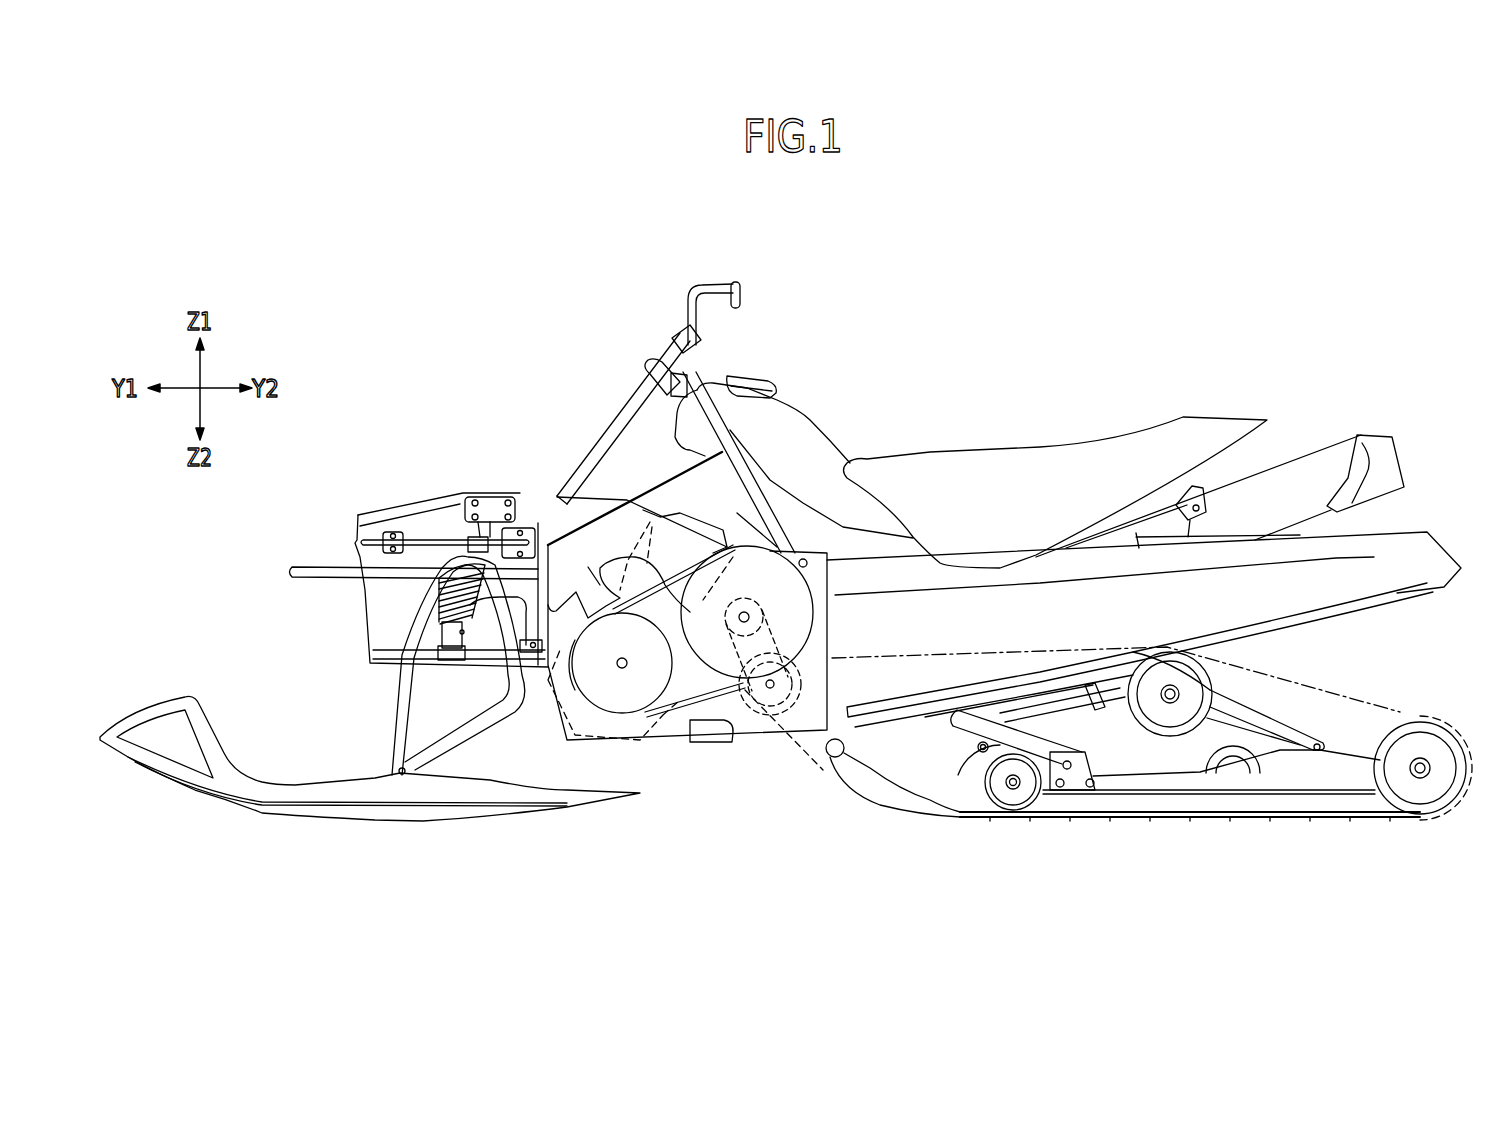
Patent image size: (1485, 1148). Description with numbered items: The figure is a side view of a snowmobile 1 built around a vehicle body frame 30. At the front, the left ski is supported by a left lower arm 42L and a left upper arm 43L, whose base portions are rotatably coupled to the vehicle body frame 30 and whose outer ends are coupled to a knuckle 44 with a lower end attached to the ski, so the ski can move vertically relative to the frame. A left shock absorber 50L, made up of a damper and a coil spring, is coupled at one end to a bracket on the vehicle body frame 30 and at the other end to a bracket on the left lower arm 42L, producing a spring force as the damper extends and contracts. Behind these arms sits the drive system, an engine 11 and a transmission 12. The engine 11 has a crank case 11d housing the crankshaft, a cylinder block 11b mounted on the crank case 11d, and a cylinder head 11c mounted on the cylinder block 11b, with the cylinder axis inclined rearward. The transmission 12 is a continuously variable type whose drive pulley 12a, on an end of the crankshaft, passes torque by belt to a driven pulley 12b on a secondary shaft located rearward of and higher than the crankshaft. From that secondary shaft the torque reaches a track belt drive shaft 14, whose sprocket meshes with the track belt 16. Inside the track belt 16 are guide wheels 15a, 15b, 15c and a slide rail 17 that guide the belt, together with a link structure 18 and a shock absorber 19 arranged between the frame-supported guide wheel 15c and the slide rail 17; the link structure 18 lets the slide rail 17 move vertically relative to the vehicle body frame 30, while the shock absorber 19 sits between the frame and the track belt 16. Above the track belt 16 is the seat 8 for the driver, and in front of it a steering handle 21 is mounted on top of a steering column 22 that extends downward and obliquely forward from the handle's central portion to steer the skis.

The snowmobile 1 is at (1143, 372).
The seat 8 is at (1086, 440).
The engine 11 is at (600, 585).
The cylinder block 11b is at (623, 572).
The cylinder head 11c is at (712, 537).
The crank case 11d is at (650, 728).
The transmission 12 is at (730, 692).
The drive pulley 12a is at (603, 708).
The driven pulley 12b is at (807, 620).
The track belt drive shaft 14 is at (783, 683).
The guide wheel 15a is at (1005, 805).
The guide wheel 15b is at (1427, 814).
The guide wheel 15c is at (1207, 770).
The track belt 16 is at (1193, 817).
The slide rail 17 is at (1102, 800).
The link structure 18 is at (1283, 718).
The shock absorber 19 is at (978, 710).
The steering handle 21 is at (690, 305).
The steering column 22 is at (607, 437).
The vehicle body frame 30 is at (1250, 552).
The left lower arm 42L is at (513, 660).
The left upper arm 43L is at (432, 540).
The knuckle 44 is at (392, 748).
The left shock absorber 50L is at (458, 585).